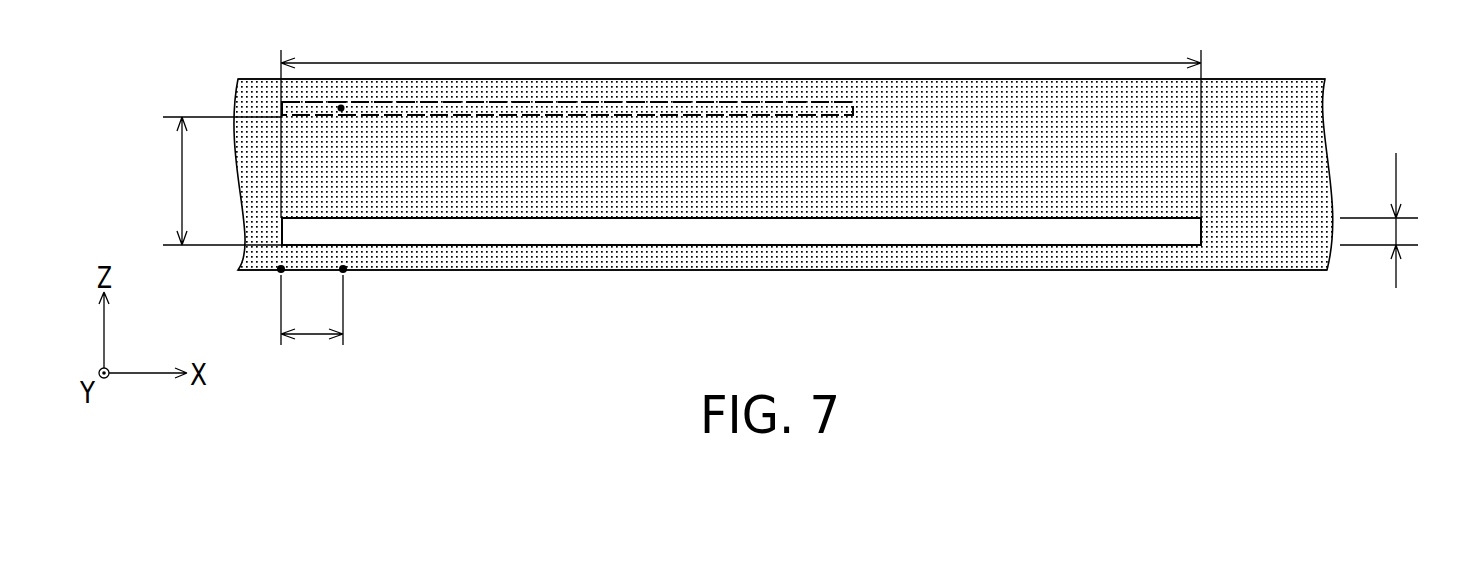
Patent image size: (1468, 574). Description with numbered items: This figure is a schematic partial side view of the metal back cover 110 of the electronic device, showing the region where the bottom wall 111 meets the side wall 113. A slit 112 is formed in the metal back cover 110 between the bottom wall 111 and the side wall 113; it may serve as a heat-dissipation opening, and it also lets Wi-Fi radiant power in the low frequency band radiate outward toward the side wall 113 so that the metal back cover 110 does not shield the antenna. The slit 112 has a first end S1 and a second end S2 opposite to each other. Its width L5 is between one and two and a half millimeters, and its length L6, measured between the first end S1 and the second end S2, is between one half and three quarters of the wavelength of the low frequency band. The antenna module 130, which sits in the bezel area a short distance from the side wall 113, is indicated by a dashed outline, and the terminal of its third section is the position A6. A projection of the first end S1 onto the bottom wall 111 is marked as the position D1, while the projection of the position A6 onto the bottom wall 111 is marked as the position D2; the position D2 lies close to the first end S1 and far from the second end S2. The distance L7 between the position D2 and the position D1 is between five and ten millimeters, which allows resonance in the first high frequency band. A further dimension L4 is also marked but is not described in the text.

The metal back cover 110 is at (783, 174).
The bottom wall 111 is at (627, 258).
The slit 112 is at (982, 236).
The side wall 113 is at (1268, 93).
The antenna module 130 is at (278, 108).
The position A6 is at (356, 105).
The first end S1 is at (300, 232).
The second end S2 is at (1183, 232).
The position D1 is at (266, 285).
The position D2 is at (359, 285).
The length L4 is at (211, 181).
The width of the slit L5 is at (1397, 220).
The length of the slit L6 is at (741, 118).
The distance between positions D2 and D1 L7 is at (312, 326).